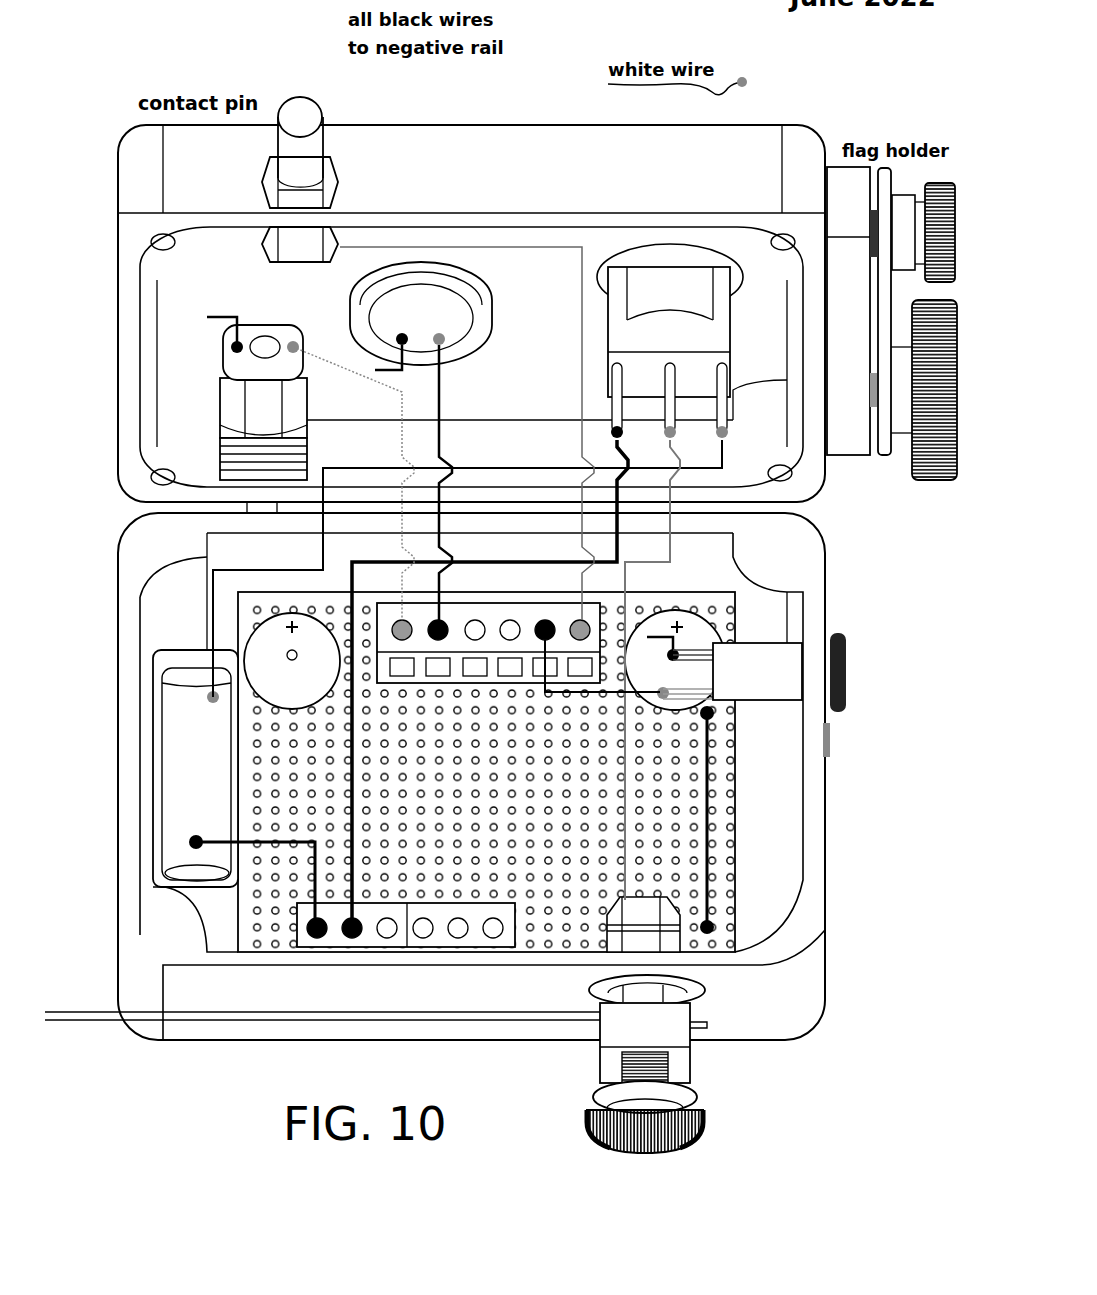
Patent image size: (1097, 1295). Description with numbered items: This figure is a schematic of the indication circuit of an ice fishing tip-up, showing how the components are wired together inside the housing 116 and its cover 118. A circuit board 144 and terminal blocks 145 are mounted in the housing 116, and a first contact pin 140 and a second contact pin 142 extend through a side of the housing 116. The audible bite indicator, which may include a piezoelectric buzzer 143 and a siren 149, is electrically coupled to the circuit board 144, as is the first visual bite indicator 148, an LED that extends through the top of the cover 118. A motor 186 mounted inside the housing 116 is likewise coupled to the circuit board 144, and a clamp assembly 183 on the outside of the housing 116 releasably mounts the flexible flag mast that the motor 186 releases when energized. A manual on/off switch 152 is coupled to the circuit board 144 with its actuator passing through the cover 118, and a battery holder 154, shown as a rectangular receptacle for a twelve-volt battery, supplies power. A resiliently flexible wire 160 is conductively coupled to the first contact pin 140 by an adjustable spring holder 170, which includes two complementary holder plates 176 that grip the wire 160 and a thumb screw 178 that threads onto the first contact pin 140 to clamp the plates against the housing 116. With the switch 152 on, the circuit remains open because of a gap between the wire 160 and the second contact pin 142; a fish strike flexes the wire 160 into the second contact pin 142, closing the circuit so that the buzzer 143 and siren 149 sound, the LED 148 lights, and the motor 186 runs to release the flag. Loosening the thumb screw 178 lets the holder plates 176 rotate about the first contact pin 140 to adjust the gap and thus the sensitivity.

The housing 116 is at (817, 917).
The cover 118 is at (773, 123).
The first contact pin 140 is at (622, 1066).
The second contact pin 142 is at (312, 153).
The piezoelectric buzzer 143 is at (247, 633).
The circuit board 144 is at (680, 835).
The terminal blocks 145 is at (460, 648).
The first visual bite indicator 148 is at (470, 353).
The siren 149 is at (847, 672).
The switch 152 is at (715, 333).
The battery holder 154 is at (175, 660).
The wire 160 is at (96, 1022).
The adjustable spring holder 170 is at (701, 1041).
The holder plates 176 is at (687, 1068).
The thumb screw 178 is at (700, 1123).
The clamp assembly 183 is at (874, 490).
The motor 186 is at (232, 362).